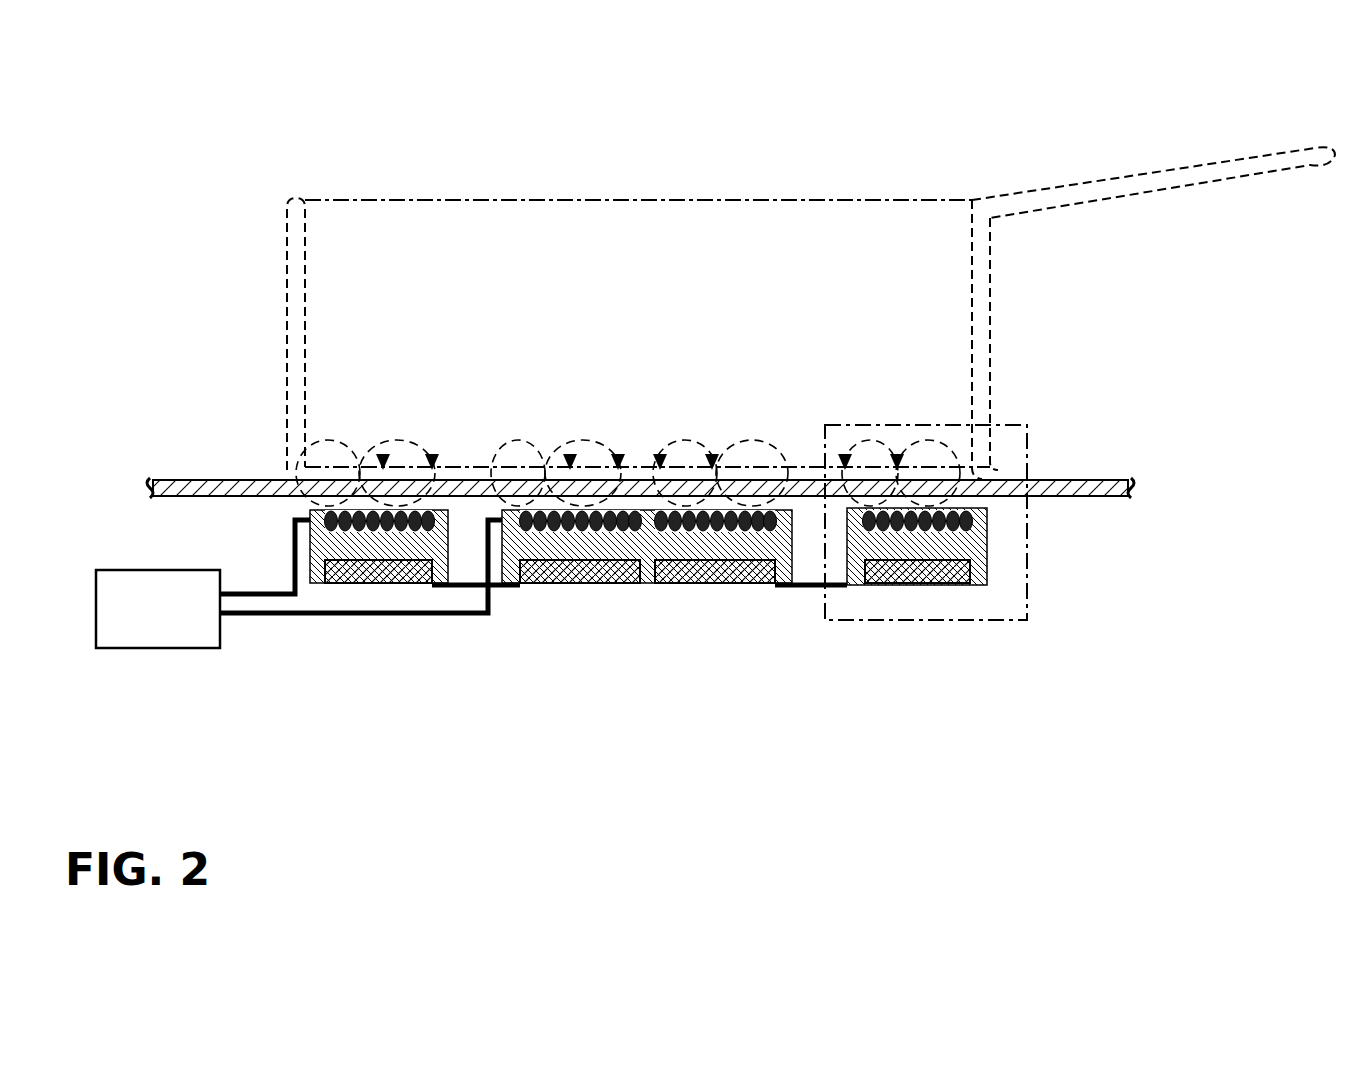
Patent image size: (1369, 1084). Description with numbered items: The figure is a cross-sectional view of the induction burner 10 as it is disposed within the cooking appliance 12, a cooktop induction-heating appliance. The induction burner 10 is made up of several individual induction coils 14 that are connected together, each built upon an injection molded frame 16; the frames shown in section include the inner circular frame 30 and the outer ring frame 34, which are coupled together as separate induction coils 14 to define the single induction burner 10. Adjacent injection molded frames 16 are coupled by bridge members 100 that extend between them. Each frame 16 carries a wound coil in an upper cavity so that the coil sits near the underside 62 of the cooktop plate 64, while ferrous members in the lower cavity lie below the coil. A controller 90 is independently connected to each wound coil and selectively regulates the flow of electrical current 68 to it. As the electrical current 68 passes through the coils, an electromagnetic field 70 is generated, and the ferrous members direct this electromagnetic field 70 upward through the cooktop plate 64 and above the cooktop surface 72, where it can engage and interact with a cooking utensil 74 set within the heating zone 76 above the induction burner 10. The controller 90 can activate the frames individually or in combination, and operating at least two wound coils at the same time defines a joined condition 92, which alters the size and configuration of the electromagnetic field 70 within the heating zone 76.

The induction burner 10 is at (559, 666).
The cooking appliance 12 is at (260, 218).
The induction coil 14 is at (936, 596).
The injection molded frame 16 is at (338, 542).
The inner circular frame 30 is at (678, 600).
The outer ring frame 34 is at (379, 597).
The underside 62 is at (1105, 497).
The cooktop plate 64 is at (1078, 480).
The electrical current 68 is at (778, 497).
The electromagnetic field 70 is at (338, 440).
The cooktop surface 72 is at (195, 480).
The cooking utensil 74 is at (456, 282).
The heating zone 76 is at (643, 456).
The controller 90 is at (124, 652).
The joined condition 92 is at (803, 422).
The bridge member 100 is at (460, 595).